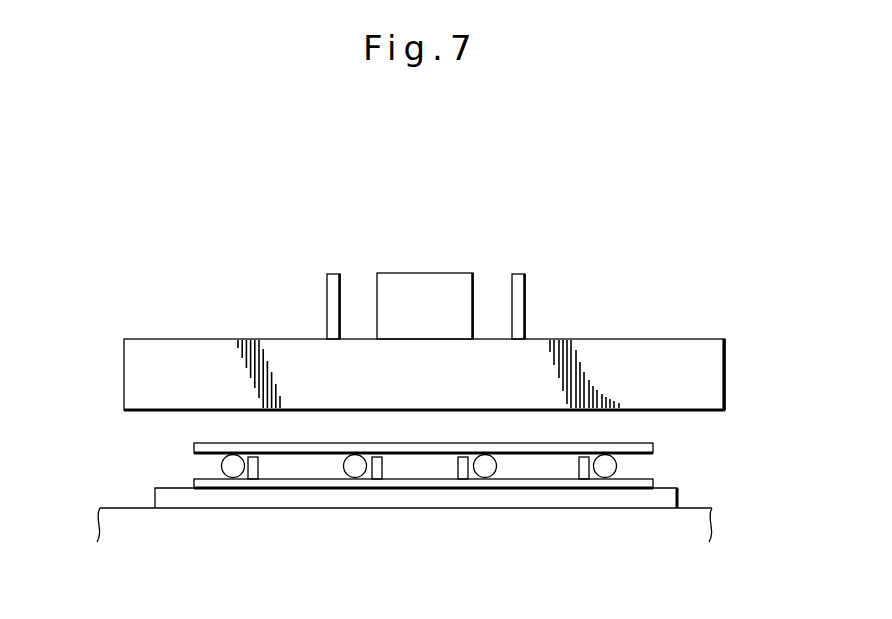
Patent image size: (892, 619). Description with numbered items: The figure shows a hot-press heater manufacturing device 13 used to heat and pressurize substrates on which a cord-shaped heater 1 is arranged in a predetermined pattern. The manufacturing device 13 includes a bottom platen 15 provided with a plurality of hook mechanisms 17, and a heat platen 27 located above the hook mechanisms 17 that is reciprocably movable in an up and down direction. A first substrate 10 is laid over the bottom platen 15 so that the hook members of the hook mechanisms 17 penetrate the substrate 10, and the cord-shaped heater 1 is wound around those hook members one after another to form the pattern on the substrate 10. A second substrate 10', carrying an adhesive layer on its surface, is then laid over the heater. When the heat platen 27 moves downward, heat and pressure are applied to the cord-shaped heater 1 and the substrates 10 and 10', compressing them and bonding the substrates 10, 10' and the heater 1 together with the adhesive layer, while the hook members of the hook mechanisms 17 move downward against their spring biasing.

The hot-press heater manufacturing device 13 is at (585, 334).
The heat platen 27 is at (720, 339).
The second substrate 10' is at (478, 441).
The first substrate 10 is at (474, 477).
The cord-shaped heater 1 is at (222, 465).
The hook mechanisms 17 is at (253, 474).
The bottom platen 15 is at (177, 496).